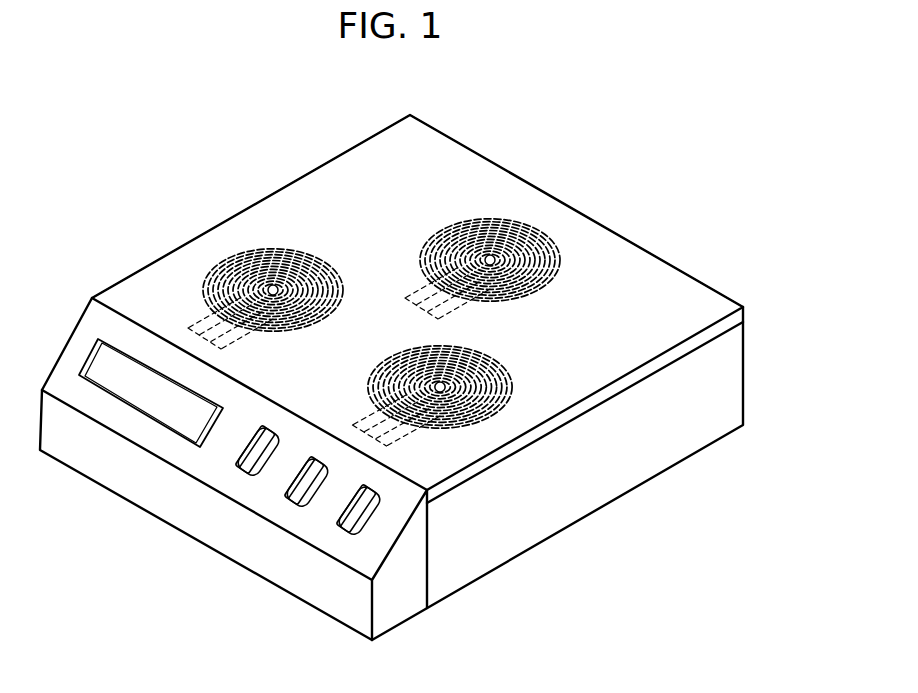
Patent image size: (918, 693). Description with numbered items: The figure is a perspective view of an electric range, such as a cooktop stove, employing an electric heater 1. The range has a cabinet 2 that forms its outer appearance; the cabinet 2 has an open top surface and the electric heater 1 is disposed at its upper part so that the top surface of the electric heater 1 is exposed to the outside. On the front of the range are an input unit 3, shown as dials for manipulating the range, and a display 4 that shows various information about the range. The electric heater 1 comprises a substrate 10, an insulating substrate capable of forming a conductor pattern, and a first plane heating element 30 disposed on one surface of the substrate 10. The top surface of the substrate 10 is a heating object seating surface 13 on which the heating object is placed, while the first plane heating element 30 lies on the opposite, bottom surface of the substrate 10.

The electric heater 1 is at (243, 157).
The cabinet 2 is at (728, 383).
The input unit 3 is at (240, 475).
The display 4 is at (160, 400).
The substrate 10 is at (535, 187).
The heating object seating surface 13 is at (482, 178).
The first plane heating element 30 is at (571, 234).